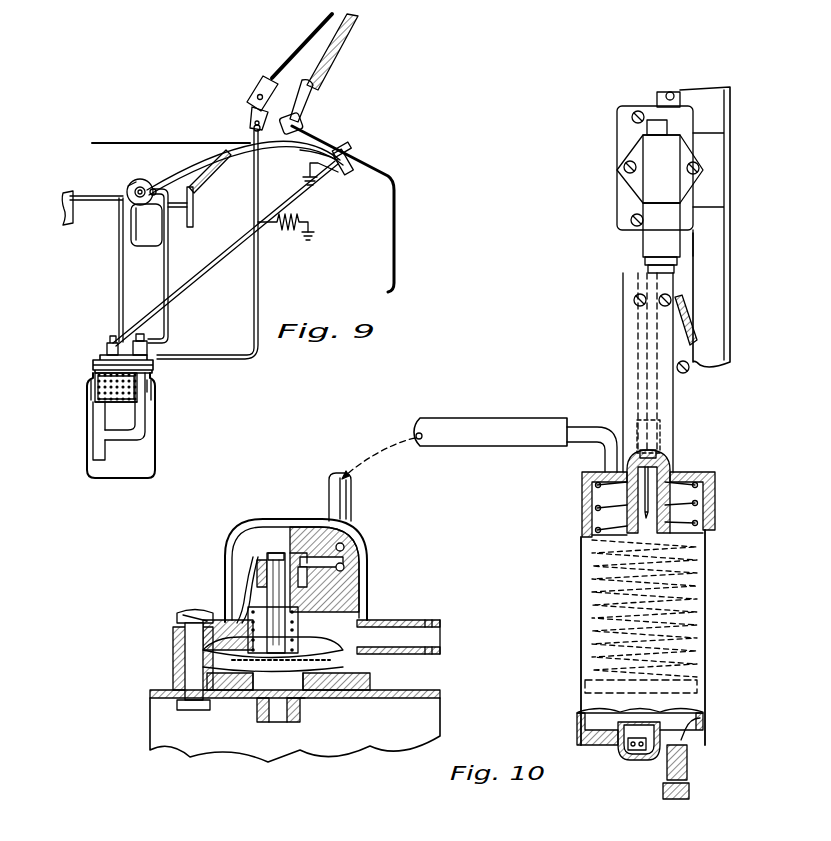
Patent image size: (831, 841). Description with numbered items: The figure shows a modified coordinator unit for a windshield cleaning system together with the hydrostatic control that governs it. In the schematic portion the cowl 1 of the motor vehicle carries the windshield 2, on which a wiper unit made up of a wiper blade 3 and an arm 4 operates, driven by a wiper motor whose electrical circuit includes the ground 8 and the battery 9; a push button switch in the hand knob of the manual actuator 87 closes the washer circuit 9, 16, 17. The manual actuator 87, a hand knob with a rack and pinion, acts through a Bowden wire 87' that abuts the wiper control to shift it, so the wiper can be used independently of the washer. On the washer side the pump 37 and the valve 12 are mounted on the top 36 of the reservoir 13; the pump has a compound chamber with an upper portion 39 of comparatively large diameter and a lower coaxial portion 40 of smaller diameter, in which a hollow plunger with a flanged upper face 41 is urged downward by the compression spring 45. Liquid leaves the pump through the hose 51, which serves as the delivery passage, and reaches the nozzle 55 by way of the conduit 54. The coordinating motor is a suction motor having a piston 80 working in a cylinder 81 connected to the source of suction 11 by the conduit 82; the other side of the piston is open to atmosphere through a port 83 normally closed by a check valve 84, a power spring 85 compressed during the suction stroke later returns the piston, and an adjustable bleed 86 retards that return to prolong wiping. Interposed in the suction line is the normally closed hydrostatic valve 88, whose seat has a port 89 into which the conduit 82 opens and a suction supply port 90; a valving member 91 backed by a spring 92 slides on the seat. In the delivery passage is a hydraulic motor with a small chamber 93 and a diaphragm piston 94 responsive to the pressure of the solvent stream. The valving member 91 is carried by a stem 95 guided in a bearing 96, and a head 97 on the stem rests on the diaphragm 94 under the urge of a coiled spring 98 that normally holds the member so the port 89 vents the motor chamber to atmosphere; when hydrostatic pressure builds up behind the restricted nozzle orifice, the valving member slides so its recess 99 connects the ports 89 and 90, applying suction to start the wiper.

In FIG. 9, the cowl 1 is at (138, 143).
In FIG. 9, the windshield 2 is at (338, 63).
In FIG. 9, the wiper blade 3 is at (318, 96).
In FIG. 9, the arm 4 is at (270, 72).
In FIG. 9, the ground 8 is at (312, 240).
In FIG. 9, the battery 9 is at (285, 233).
In FIG. 9, the source of suction 11 is at (67, 224).
In FIG. 9, the valve 12 is at (107, 341).
In FIG. 9, the reservoir 13 is at (151, 448).
In FIG. 9, the washer circuit 16 is at (216, 250).
In FIG. 9, the washer circuit 17 is at (230, 256).
In FIG. 9, the top of reservoir 36 is at (153, 366).
In FIG. 10, the top of reservoir 36 is at (432, 698).
In FIG. 9, the pump 37 is at (92, 399).
In FIG. 9, the upper portion 39 is at (150, 388).
In FIG. 9, the lower coaxial portion 40 is at (93, 427).
In FIG. 9, the flanged upper face 41 is at (96, 393).
In FIG. 9, the compression spring 45 is at (93, 379).
In FIG. 9, the hose 51 is at (146, 420).
In FIG. 10, the hose 51 is at (267, 713).
In FIG. 9, the hoses 54 is at (259, 302).
In FIG. 10, the hoses 54 is at (421, 633).
In FIG. 9, the nozzle 55 is at (253, 124).
In FIG. 10, the piston 80 is at (677, 722).
In FIG. 9, the cylinder 81 is at (137, 181).
In FIG. 10, the cylinder 81 is at (705, 671).
In FIG. 9, the conduit 82 is at (170, 346).
In FIG. 10, the conduit 82 is at (483, 420).
In FIG. 9, the port 83 is at (148, 180).
In FIG. 10, the port 83 is at (627, 757).
In FIG. 10, the check valve 84 is at (623, 748).
In FIG. 10, the power spring 85 is at (681, 521).
In FIG. 10, the adjustable bleed 86 is at (700, 741).
In FIG. 9, the manual actuator 87 is at (361, 156).
In FIG. 9, the Bowden wire 87' is at (303, 167).
In FIG. 10, the Bowden wire 87' is at (728, 290).
In FIG. 9, the hydrostatic valve 88 is at (137, 342).
In FIG. 10, the hydrostatic valve 88 is at (366, 528).
In FIG. 10, the port 89 is at (291, 543).
In FIG. 10, the suction supply port 90 is at (320, 564).
In FIG. 10, the valving member 91 is at (266, 553).
In FIG. 10, the spring 92 is at (252, 578).
In FIG. 10, the small chamber 93 is at (310, 697).
In FIG. 10, the diaphragm piston 94 is at (310, 678).
In FIG. 10, the stem 95 is at (266, 598).
In FIG. 10, the bearing 96 is at (298, 621).
In FIG. 10, the head 97 is at (325, 665).
In FIG. 10, the coiled spring 98 is at (177, 641).
In FIG. 10, the recess 99 is at (300, 560).